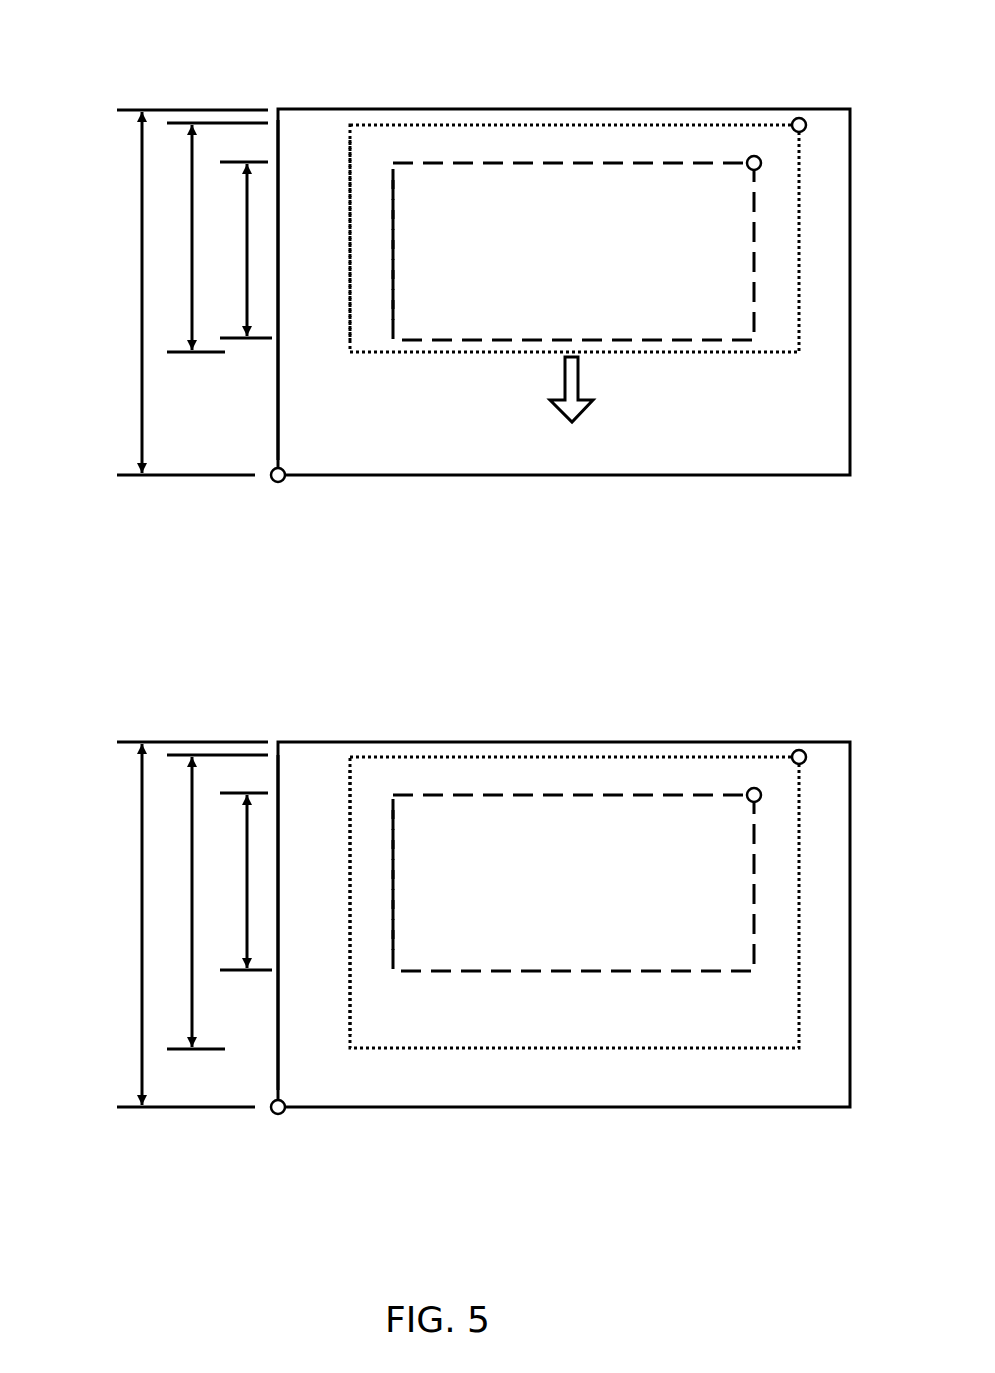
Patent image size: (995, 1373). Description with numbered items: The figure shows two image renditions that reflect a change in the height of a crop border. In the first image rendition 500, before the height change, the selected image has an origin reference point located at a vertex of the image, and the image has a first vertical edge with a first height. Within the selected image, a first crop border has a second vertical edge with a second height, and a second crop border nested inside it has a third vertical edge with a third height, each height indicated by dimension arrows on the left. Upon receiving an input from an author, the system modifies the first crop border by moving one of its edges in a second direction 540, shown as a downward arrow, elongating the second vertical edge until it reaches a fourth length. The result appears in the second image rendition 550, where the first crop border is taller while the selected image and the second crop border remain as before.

The first image rendition 500 is at (150, 78).
The second image rendition 550 is at (160, 670).
The second direction 540 is at (592, 390).